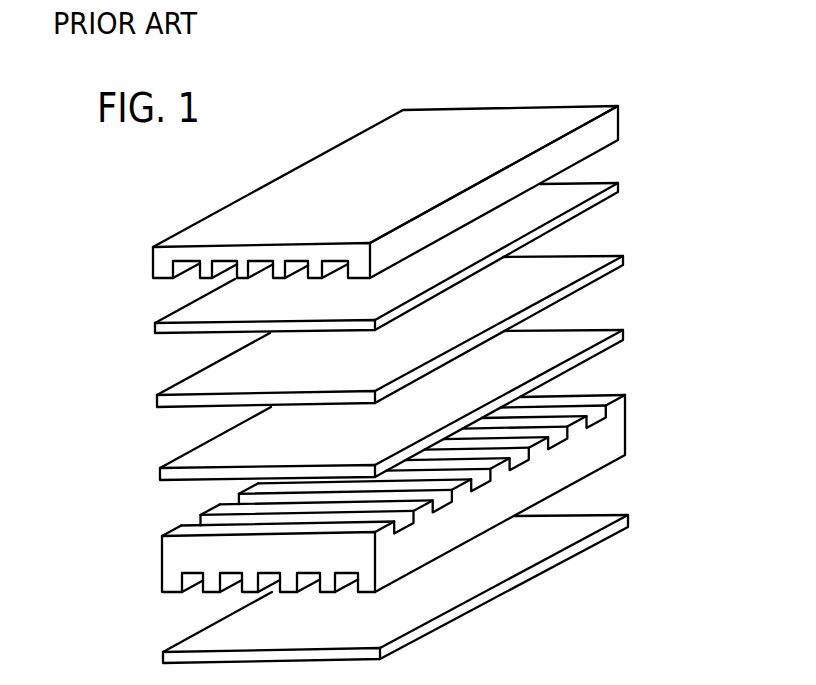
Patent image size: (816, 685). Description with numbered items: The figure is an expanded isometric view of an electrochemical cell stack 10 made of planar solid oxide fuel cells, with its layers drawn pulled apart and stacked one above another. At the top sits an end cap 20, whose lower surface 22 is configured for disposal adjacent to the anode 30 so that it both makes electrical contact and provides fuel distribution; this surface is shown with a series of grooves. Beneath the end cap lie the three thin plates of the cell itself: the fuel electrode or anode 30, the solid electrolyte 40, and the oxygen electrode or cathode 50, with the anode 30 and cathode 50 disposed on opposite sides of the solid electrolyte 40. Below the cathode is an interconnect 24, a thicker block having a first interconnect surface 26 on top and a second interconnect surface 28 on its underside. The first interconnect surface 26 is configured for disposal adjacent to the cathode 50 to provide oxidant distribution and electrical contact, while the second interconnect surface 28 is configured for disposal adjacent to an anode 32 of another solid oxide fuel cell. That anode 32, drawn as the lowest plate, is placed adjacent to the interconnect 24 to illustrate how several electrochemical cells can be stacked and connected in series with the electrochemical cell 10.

The electrochemical cell stack 10 is at (582, 50).
The end cap 20 is at (409, 215).
The surface 22 is at (193, 277).
The interconnect 24 is at (409, 497).
The first interconnect surface 26 is at (590, 393).
The second interconnect surface 28 is at (207, 592).
The anode 30 is at (618, 186).
The anode 32 is at (628, 517).
The solid electrolyte 40 is at (623, 258).
The cathode 50 is at (623, 331).